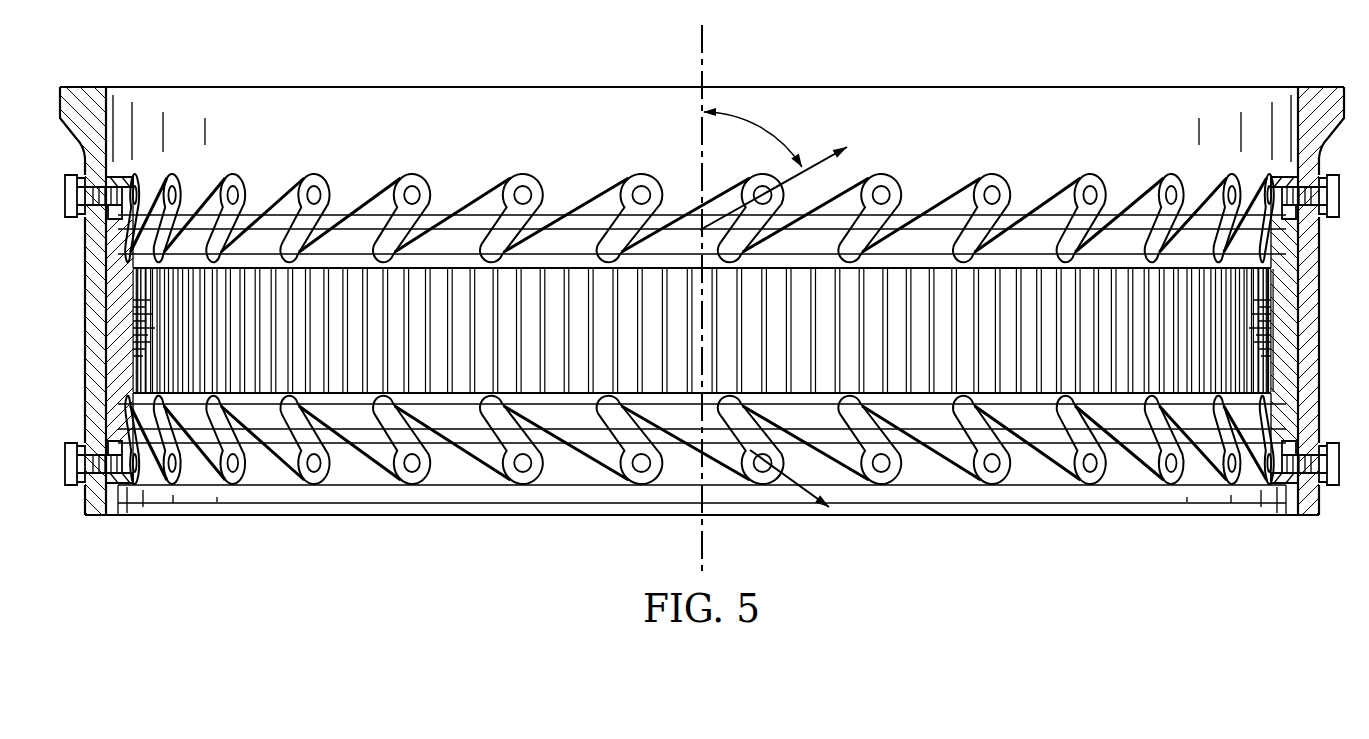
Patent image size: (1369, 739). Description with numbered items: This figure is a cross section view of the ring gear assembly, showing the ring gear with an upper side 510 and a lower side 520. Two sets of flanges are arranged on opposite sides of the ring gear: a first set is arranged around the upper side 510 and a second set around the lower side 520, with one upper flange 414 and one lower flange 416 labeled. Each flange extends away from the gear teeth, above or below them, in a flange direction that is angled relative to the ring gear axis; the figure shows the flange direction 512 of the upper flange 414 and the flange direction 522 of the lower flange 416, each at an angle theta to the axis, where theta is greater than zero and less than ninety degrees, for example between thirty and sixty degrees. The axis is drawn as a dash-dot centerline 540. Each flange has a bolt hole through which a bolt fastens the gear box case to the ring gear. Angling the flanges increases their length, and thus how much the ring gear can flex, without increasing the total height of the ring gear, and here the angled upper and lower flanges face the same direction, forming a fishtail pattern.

The upper flange 414 is at (742, 199).
The lower flange 416 is at (727, 462).
The upper side 510 is at (459, 181).
The flange direction 512 is at (820, 168).
The lower side 520 is at (381, 503).
The flange direction 522 is at (803, 497).
The central axis 540 is at (705, 45).